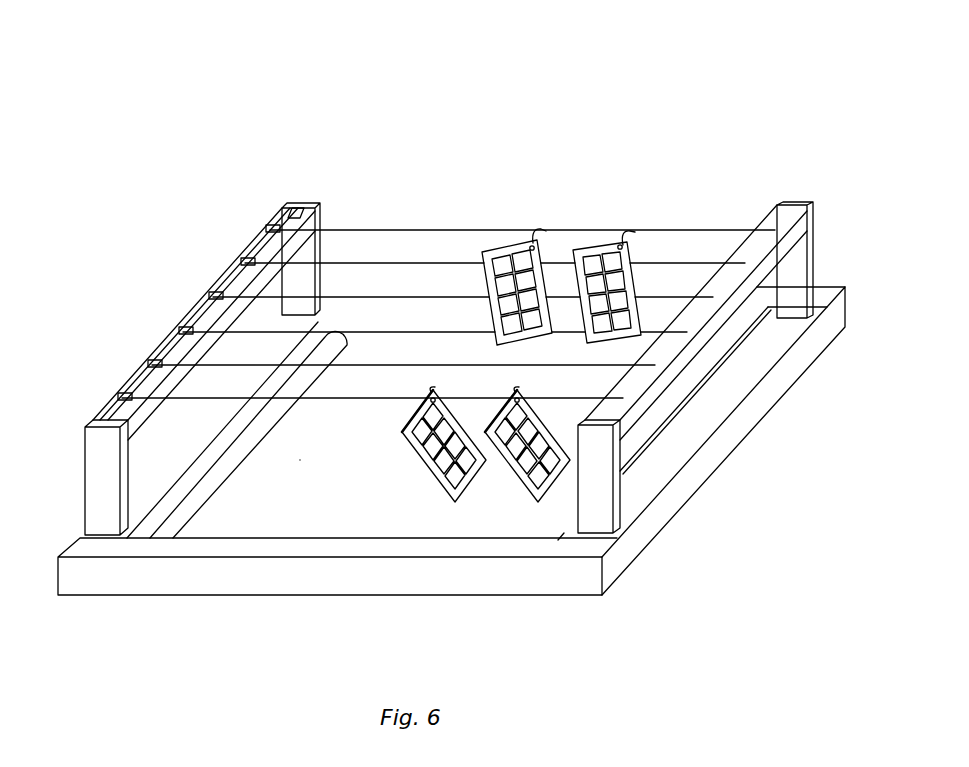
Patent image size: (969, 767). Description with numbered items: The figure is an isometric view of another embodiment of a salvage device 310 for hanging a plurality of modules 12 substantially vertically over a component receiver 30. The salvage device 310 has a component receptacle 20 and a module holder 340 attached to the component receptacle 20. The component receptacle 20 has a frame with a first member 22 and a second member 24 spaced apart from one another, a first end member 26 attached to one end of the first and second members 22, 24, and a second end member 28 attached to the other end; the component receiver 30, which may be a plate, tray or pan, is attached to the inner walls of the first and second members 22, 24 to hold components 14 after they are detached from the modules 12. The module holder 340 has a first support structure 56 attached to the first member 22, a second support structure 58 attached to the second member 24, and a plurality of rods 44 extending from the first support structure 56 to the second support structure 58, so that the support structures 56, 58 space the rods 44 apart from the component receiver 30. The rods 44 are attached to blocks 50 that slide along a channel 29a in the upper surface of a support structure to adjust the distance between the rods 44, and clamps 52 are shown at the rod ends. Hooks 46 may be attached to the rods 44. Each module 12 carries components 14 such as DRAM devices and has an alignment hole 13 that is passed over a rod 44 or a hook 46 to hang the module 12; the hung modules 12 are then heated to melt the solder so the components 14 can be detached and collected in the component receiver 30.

The salvage device 310 is at (424, 335).
The module holder 340 is at (335, 208).
The channel 29a is at (295, 207).
The block 50 is at (273, 222).
The clamp 52 is at (282, 233).
The rod 44 is at (393, 226).
The alignment hole 13 is at (531, 245).
The hook 46 is at (548, 232).
The module 12 is at (549, 355).
The component 14 is at (489, 307).
The second end member 28 is at (838, 287).
The component receptacle 20 is at (474, 434).
The second member 24 is at (735, 400).
The first member 22 is at (163, 477).
The first end member 26 is at (508, 580).
The component receiver 30 is at (338, 474).
The first support structure 56 is at (100, 462).
The second support structure 58 is at (608, 495).